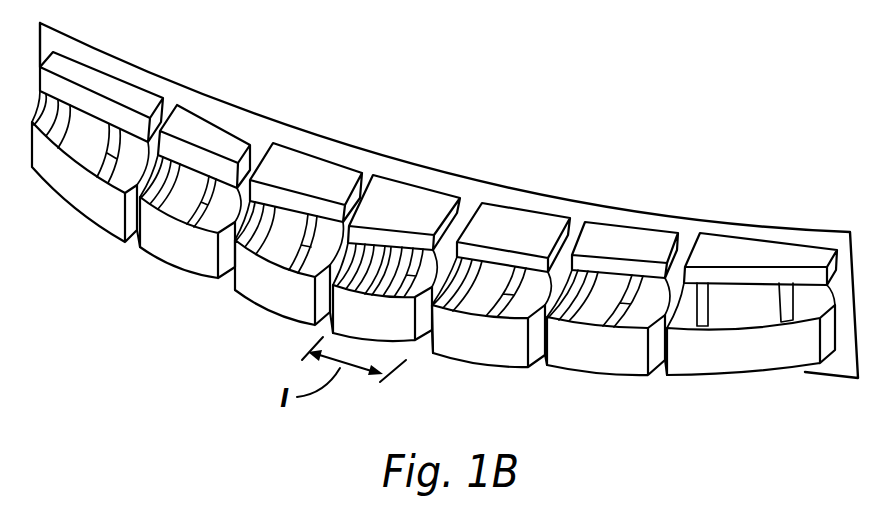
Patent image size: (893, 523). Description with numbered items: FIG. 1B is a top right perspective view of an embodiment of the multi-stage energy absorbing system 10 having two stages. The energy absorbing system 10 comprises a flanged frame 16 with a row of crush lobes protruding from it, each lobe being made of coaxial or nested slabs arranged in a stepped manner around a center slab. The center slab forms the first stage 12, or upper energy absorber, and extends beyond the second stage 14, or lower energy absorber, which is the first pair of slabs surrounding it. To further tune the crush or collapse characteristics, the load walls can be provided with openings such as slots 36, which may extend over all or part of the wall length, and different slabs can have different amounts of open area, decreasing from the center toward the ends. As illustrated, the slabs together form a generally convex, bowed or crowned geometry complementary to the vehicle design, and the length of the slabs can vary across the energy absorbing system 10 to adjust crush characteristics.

The multi-stage energy absorbing system 10 is at (345, 112).
The first stage 12 is at (70, 190).
The second stage 14 is at (515, 232).
The flanged frame 16 is at (690, 218).
The slot 36 is at (782, 303).